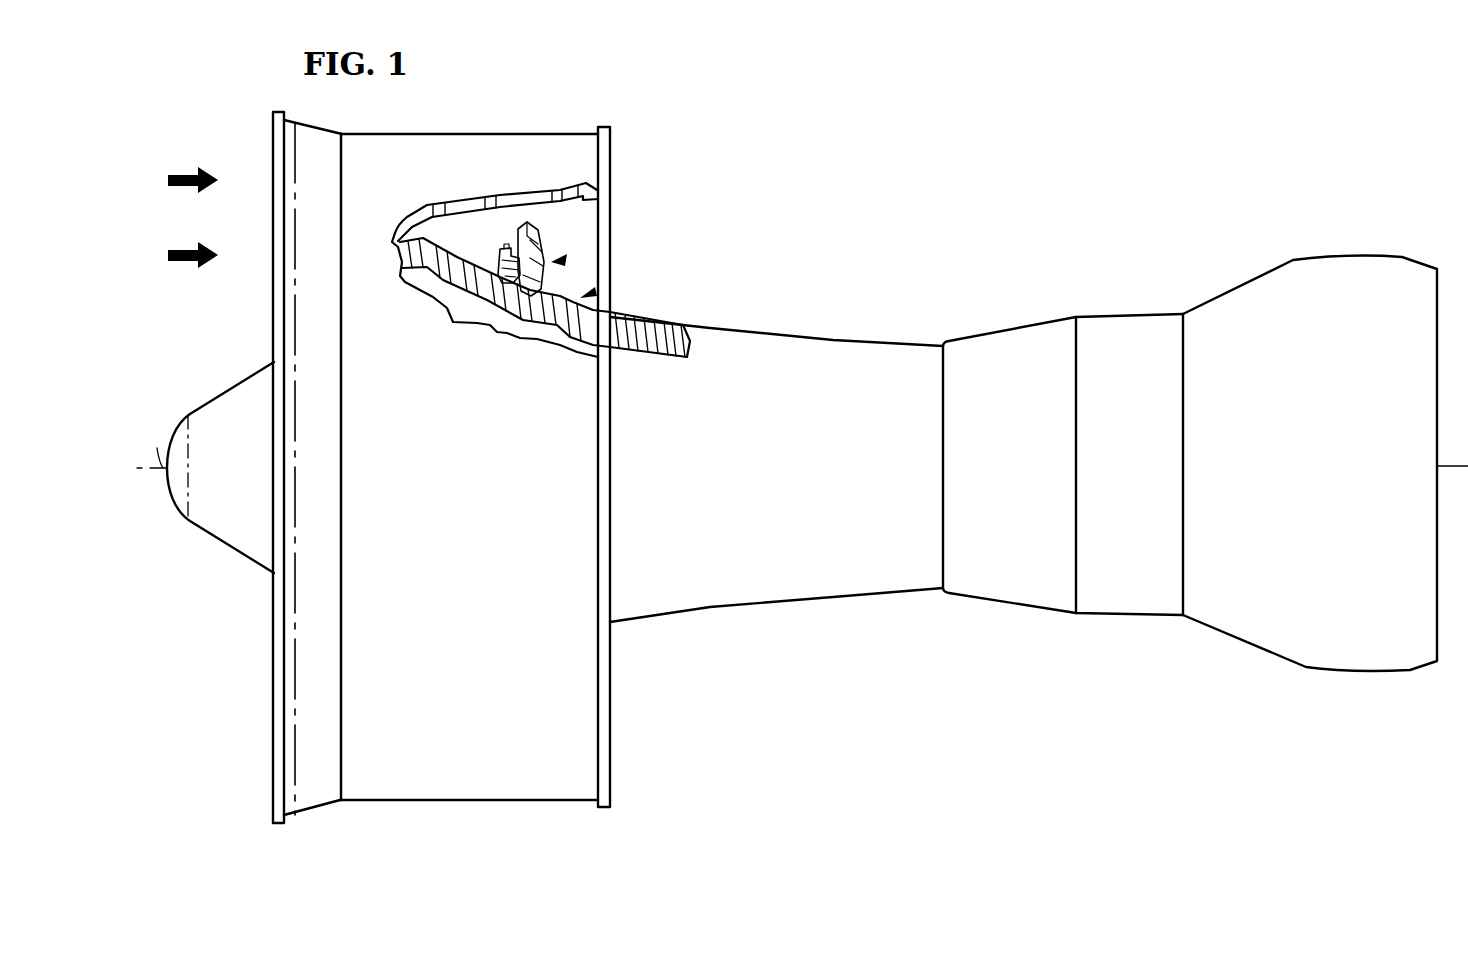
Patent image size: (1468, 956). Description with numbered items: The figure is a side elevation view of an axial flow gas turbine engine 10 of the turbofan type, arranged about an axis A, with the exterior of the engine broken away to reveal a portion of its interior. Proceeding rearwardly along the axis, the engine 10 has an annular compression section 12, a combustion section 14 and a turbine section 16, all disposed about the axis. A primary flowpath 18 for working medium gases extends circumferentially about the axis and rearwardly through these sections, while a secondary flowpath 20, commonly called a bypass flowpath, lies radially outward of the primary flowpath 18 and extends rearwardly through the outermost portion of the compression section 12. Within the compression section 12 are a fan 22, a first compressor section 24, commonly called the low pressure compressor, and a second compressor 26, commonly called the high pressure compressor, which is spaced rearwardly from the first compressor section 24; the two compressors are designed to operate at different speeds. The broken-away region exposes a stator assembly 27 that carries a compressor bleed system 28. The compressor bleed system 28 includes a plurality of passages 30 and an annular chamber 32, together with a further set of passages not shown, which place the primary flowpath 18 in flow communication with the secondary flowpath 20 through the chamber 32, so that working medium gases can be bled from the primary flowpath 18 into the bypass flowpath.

The gas turbine engine 10 is at (936, 231).
The compression section 12 is at (488, 134).
The combustion section 14 is at (1013, 323).
The turbine section 16 is at (1291, 262).
The primary flowpath 18 is at (192, 247).
The secondary flowpath 20 is at (192, 172).
The fan 22 is at (329, 480).
The first compressor section 24 is at (471, 480).
The second compressor 26 is at (652, 479).
The stator assembly 27 is at (590, 294).
The compressor bleed system 28 is at (566, 259).
The passages 30 is at (537, 272).
The annular chamber 32 is at (526, 252).